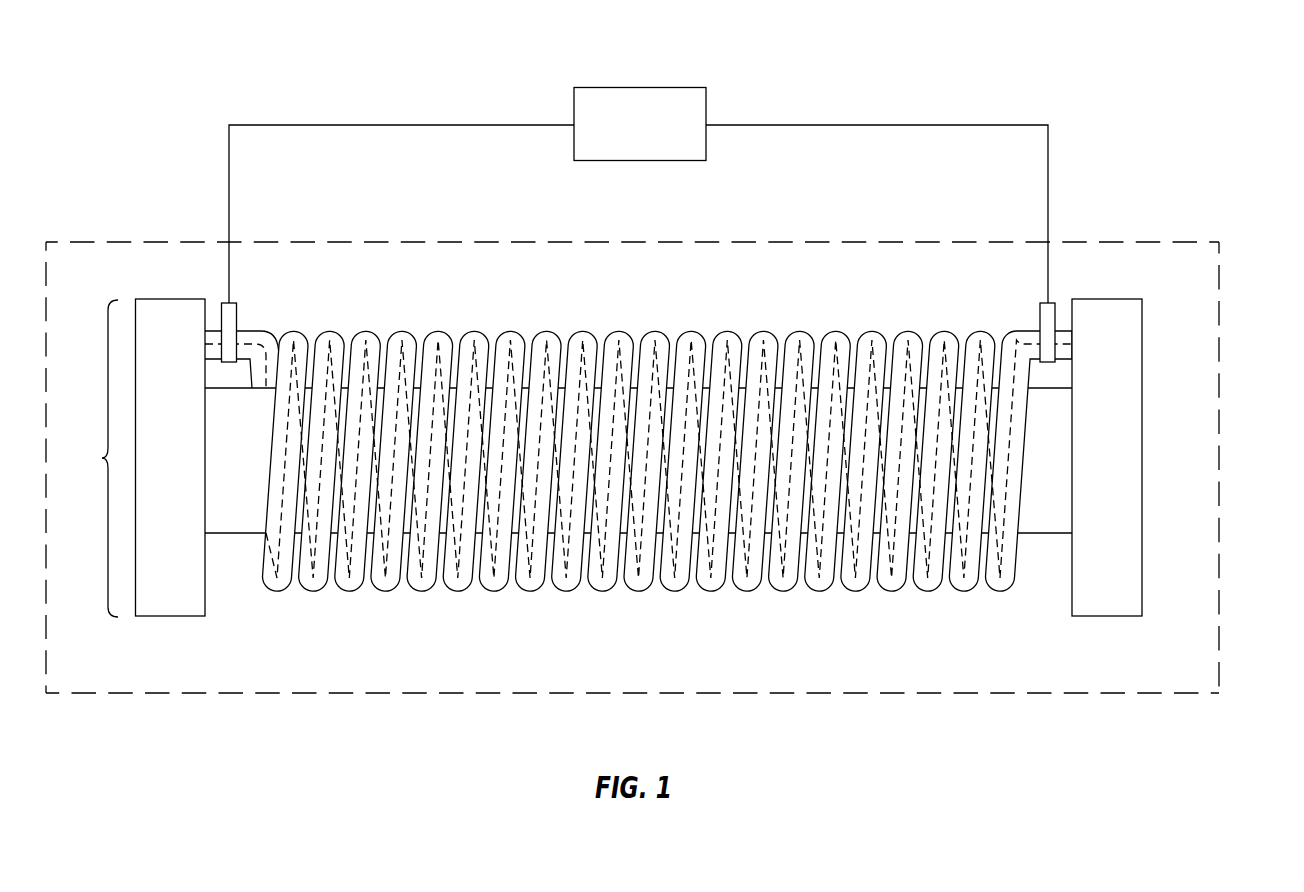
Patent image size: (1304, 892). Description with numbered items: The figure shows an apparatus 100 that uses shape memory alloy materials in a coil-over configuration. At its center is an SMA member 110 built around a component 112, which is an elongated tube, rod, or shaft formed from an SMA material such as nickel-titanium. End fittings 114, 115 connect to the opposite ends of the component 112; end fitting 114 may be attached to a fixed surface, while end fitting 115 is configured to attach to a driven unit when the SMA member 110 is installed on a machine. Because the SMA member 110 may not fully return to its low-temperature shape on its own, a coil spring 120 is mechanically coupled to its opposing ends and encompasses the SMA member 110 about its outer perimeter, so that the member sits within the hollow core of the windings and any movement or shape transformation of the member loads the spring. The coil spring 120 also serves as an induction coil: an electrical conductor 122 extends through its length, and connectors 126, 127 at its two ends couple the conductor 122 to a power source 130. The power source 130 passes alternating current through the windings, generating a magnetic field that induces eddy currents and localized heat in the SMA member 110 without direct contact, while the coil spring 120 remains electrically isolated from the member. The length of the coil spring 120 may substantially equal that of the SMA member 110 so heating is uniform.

The apparatus 100 is at (1219, 580).
The SMA member 110 is at (103, 458).
The component 112 is at (1044, 513).
The end fitting 114 is at (180, 299).
The end fitting 115 is at (1108, 299).
The coil spring 120 is at (593, 330).
The electrical conductor 122 is at (392, 565).
The connector 126 is at (233, 310).
The connector 127 is at (1045, 312).
The power source 130 is at (603, 87).